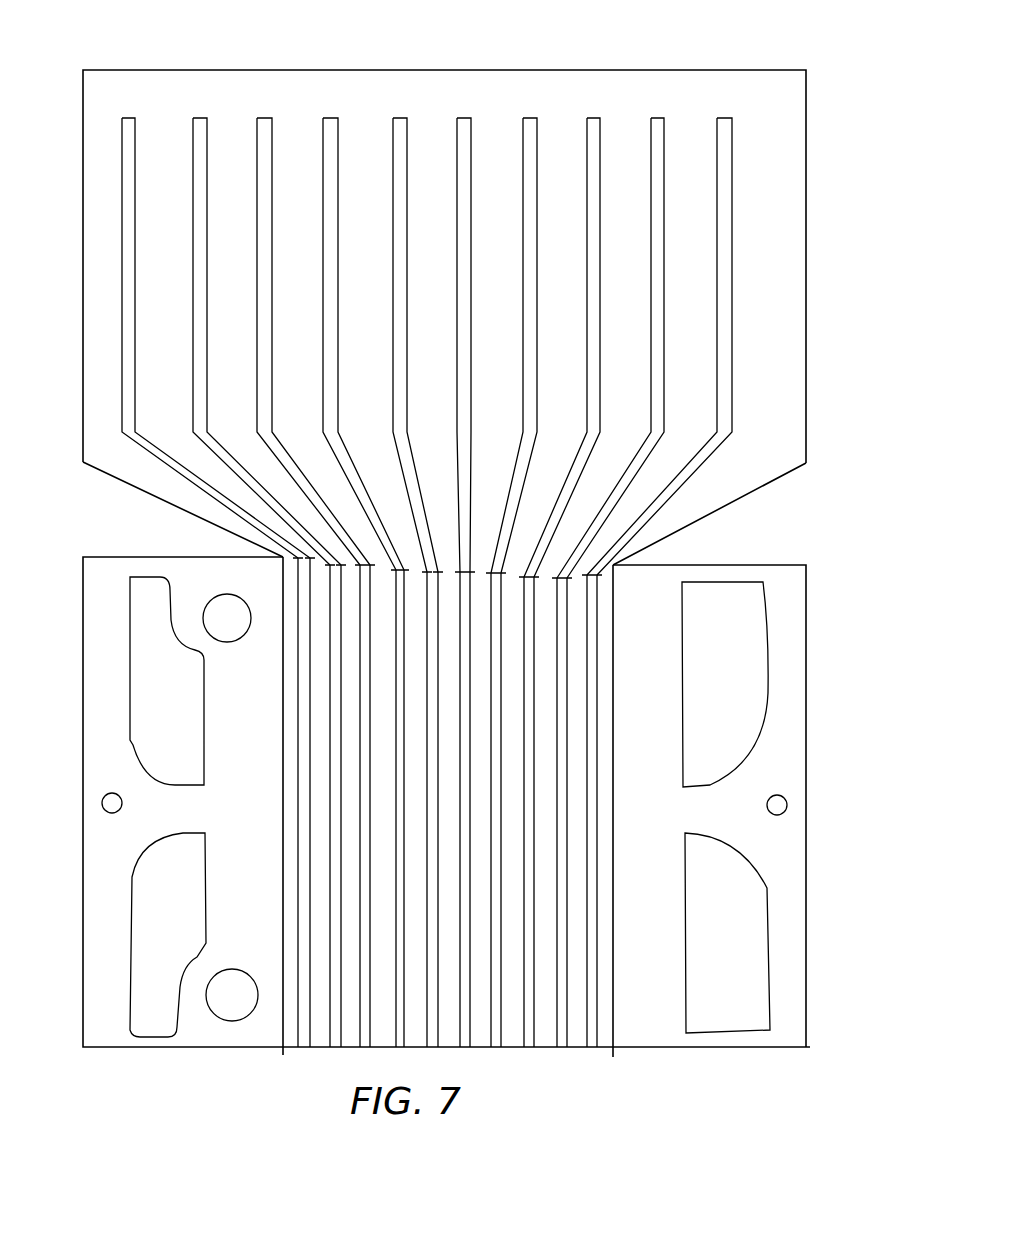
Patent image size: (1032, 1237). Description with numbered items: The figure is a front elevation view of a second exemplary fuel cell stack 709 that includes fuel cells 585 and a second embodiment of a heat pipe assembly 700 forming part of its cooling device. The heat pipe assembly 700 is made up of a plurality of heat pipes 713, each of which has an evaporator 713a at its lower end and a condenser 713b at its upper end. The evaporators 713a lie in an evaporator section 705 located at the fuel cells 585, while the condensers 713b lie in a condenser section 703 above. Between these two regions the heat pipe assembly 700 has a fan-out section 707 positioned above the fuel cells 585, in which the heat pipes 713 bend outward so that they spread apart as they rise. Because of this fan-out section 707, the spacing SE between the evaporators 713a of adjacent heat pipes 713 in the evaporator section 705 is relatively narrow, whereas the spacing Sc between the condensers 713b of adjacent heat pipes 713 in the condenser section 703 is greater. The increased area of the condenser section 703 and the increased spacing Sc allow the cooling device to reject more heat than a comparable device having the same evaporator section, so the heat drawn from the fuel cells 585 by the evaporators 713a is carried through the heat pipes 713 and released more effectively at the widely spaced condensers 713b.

The heat pipe assembly 700 is at (498, 554).
The condenser section 703 is at (444, 286).
The evaporator section 705 is at (498, 791).
The fan-out section 707 is at (172, 495).
The fuel cell stack 709 is at (905, 519).
The heat pipes 713 is at (475, 582).
The evaporators 713a is at (600, 816).
The condensers 713b is at (737, 226).
The fuel cells 585 is at (722, 563).
The condenser spacing Sc is at (193, 213).
The evaporator spacing SE is at (283, 805).